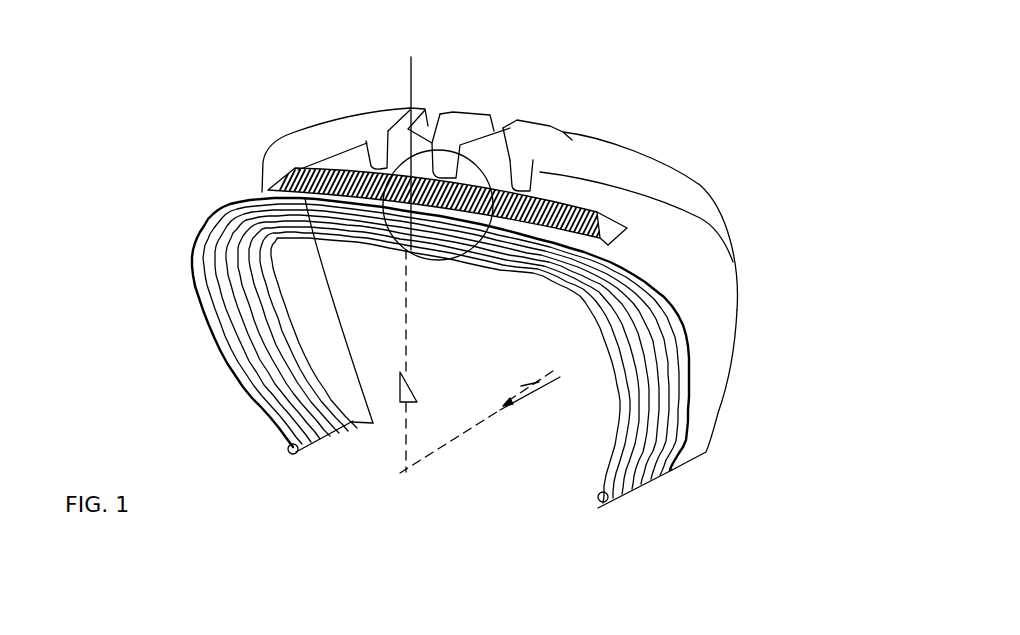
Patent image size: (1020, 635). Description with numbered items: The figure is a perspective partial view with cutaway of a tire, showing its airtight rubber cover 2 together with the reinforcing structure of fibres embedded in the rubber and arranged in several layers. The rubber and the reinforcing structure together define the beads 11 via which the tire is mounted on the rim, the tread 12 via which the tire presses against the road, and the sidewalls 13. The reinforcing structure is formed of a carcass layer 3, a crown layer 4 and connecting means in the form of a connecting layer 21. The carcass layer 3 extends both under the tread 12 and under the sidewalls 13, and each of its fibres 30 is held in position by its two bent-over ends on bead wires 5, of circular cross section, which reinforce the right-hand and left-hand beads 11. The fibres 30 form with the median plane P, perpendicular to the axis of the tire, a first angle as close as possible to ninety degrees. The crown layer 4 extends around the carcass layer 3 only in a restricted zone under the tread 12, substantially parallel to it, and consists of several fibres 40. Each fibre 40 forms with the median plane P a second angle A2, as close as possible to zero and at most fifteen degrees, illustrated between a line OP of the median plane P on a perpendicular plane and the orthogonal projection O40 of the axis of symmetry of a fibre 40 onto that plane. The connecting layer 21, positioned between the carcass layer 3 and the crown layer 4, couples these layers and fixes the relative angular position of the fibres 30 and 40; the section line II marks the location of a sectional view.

The airtight rubber cover 2 is at (487, 301).
The carcass layer 3 is at (520, 350).
The fibres 30 is at (642, 252).
The crown layer 4 is at (491, 145).
The fibres 40 is at (530, 172).
The bead wires 5 is at (289, 452).
The beads 11 is at (693, 450).
The tread 12 is at (440, 115).
The sidewalls 13 is at (707, 394).
The connecting layer 21 is at (514, 162).
The median plane P is at (418, 264).
The line of the median plane OP is at (557, 382).
The orthogonal projection of the fibre axis of symmetry O40 is at (528, 382).
The second angle A2 is at (509, 408).
The section line II is at (455, 133).